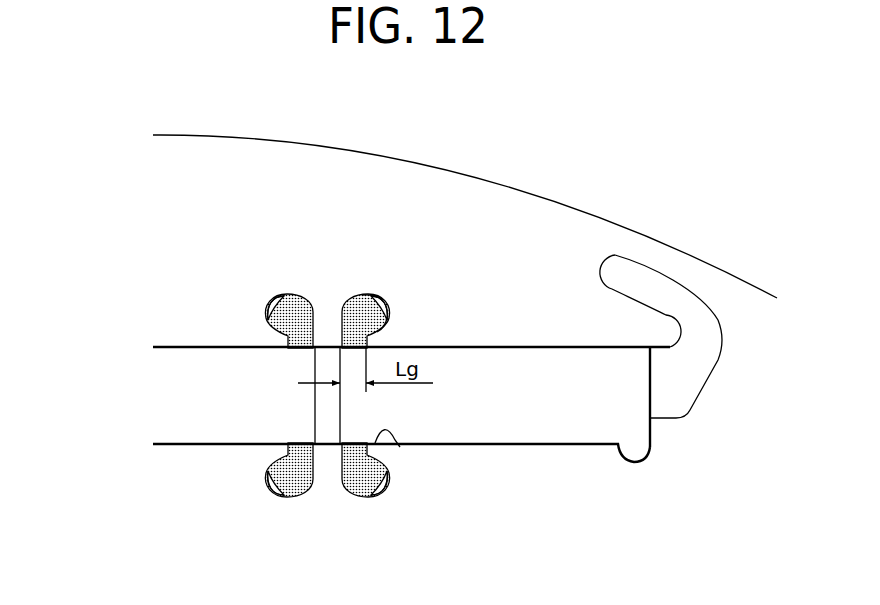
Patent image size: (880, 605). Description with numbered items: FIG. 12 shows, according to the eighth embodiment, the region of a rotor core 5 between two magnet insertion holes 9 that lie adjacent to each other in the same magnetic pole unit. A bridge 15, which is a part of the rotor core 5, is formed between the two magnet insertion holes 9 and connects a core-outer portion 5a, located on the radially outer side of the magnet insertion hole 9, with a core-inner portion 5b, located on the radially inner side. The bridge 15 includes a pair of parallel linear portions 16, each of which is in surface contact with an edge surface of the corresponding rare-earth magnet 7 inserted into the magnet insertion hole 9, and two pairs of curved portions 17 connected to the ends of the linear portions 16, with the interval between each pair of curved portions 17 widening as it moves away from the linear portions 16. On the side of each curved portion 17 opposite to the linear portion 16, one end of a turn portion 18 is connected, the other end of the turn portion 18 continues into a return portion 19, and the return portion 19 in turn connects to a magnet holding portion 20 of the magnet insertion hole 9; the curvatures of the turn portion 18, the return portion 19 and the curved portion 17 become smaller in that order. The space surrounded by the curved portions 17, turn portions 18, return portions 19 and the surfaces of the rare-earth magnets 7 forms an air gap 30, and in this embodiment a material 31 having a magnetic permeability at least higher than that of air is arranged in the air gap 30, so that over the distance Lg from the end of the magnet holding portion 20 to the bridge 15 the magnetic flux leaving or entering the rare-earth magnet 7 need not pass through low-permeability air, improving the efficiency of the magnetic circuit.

The rotor core 5 is at (631, 93).
The core-outer portion 5a is at (510, 283).
The core-inner portion 5b is at (557, 487).
The rare-earth magnet 7 is at (618, 412).
The magnet insertion hole 9 is at (665, 380).
The bridge 15 is at (326, 352).
The linear portion 16 is at (315, 417).
The curved portion 17 is at (345, 298).
The turn portion 18 is at (381, 293).
The return portion 19 is at (383, 328).
The magnet holding portion 20 is at (400, 447).
The air gap 30 is at (285, 293).
The material having higher magnetic permeability 31 is at (283, 330).